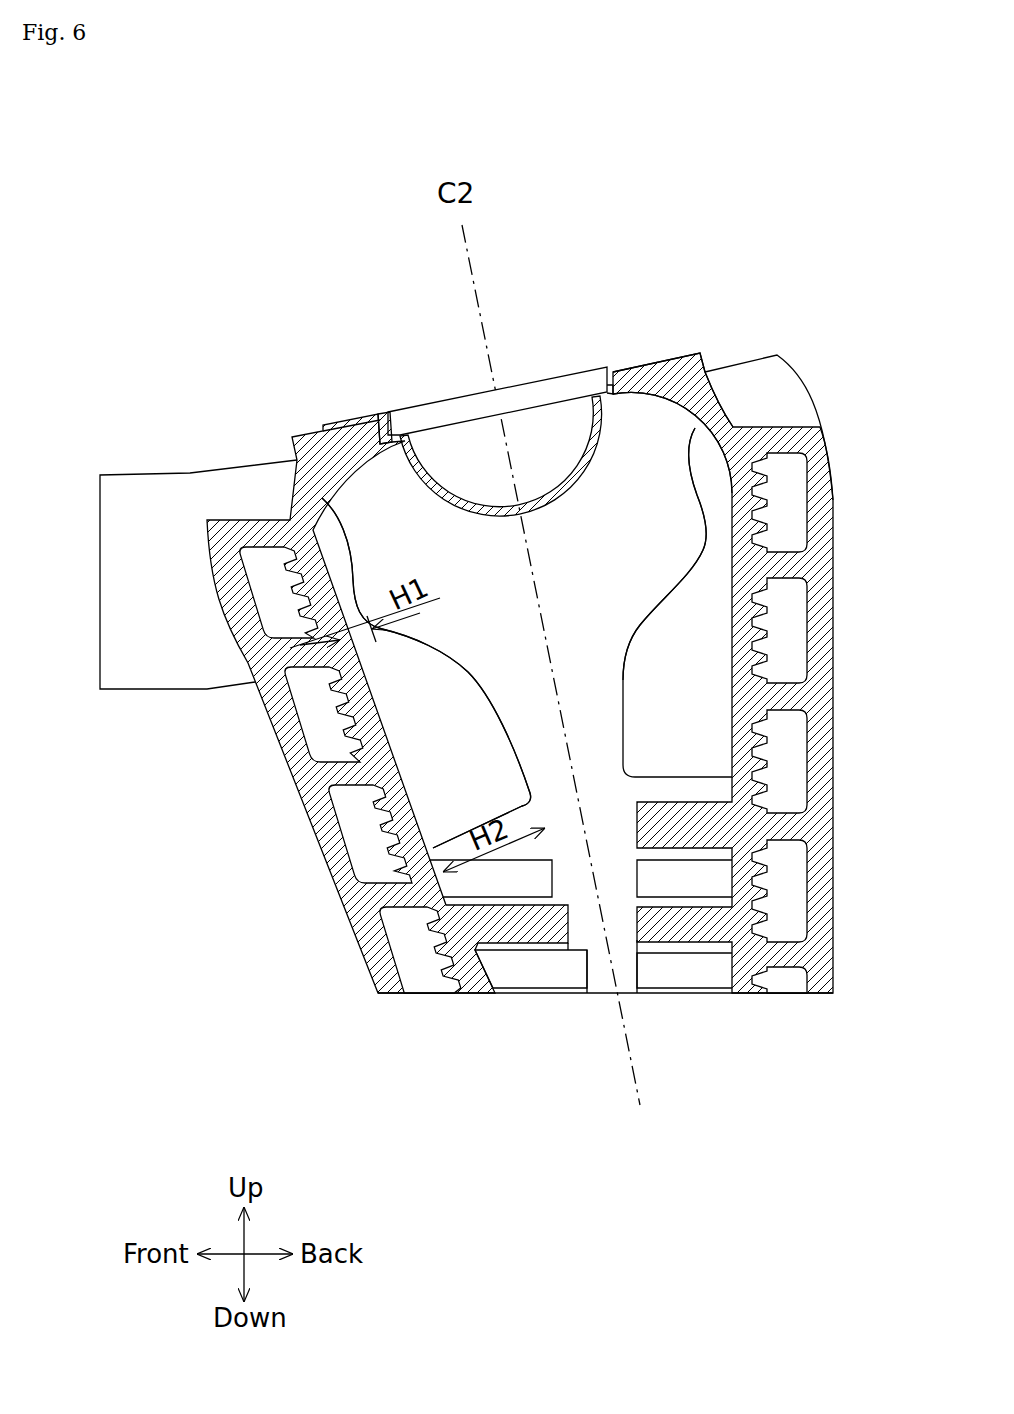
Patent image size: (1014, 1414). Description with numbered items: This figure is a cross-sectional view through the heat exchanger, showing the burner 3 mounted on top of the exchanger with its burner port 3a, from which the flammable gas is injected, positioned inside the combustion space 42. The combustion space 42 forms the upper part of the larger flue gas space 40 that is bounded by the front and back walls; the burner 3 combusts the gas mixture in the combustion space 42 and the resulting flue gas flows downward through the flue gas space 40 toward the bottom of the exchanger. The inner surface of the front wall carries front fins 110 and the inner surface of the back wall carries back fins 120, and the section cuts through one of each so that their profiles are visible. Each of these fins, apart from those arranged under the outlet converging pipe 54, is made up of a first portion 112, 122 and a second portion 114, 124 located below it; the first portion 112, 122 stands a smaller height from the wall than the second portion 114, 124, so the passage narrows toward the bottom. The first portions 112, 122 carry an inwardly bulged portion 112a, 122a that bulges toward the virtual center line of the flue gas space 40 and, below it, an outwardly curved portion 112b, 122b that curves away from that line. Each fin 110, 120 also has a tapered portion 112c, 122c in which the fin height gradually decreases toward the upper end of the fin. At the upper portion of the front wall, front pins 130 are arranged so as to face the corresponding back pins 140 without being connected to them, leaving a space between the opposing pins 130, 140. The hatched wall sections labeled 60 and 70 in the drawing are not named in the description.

The burner 3 is at (455, 397).
The burner port 3a is at (605, 417).
The flue gas space 40 is at (590, 368).
The combustion space 42 is at (382, 413).
The outlet converging pipe 54 is at (178, 700).
The lower housing wall 60 is at (432, 962).
The rear housing wall 70 is at (783, 990).
The front fins 110 is at (427, 656).
The first portion 112 is at (427, 656).
The inwardly bulged portion 112a is at (350, 528).
The outwardly curved portion 112b is at (360, 590).
The tapered portion 112c is at (418, 641).
The second portion 114 is at (521, 760).
The back fins 120 is at (630, 562).
The first portion 122 is at (624, 551).
The inwardly bulged portion 122a is at (686, 463).
The outwardly curved portion 122b is at (703, 530).
The tapered portion 122c is at (673, 582).
The second portion 124 is at (618, 683).
The front pins 130 is at (577, 935).
The back pins 140 is at (632, 935).